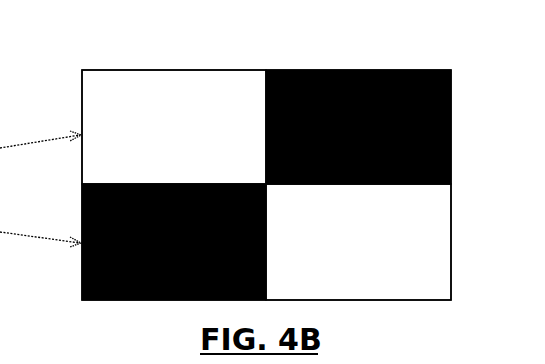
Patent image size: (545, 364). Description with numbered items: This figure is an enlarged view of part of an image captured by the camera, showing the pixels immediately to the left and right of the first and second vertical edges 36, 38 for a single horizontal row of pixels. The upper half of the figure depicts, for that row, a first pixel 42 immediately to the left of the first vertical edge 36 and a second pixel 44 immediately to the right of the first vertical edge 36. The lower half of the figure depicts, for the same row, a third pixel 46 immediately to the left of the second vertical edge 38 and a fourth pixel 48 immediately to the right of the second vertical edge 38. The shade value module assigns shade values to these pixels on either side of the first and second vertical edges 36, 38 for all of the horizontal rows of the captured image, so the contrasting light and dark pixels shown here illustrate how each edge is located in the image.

The first vertical edge 36 is at (265, 98).
The second vertical edge 38 is at (268, 252).
The first pixel 42 is at (163, 82).
The second pixel 44 is at (452, 113).
The third pixel 46 is at (82, 276).
The fourth pixel 48 is at (417, 255).